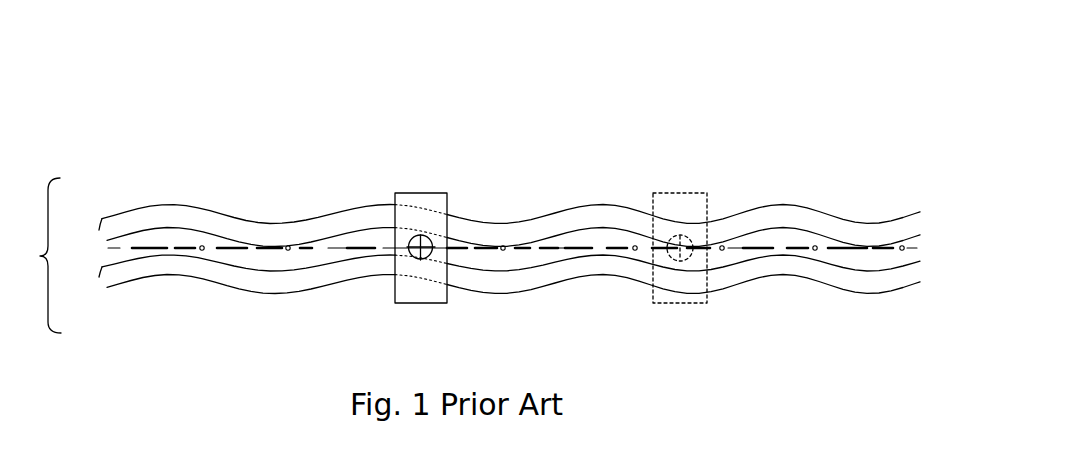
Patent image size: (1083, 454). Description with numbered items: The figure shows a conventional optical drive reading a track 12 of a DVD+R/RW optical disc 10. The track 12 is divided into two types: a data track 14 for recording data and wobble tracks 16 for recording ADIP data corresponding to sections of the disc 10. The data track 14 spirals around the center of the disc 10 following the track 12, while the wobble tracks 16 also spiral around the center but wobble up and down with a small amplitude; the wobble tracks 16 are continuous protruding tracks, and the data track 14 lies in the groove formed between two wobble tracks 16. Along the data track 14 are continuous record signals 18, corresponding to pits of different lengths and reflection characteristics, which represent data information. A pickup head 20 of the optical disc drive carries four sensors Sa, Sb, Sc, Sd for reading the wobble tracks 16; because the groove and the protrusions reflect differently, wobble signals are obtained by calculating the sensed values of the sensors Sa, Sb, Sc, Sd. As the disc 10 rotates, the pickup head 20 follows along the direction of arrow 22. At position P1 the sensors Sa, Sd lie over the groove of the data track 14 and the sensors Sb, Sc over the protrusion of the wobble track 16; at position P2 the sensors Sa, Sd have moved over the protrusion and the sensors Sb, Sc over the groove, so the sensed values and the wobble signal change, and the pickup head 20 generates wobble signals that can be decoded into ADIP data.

The optical disc 10 is at (827, 89).
The track 12 is at (40, 256).
The data track 14 is at (106, 248).
The wobble track 16 is at (107, 240).
The record signal 18 is at (165, 233).
The pickup head 20 is at (440, 298).
The arrow 22 is at (618, 168).
The position P1 is at (423, 168).
The position P2 is at (680, 229).
The sensor Sa is at (434, 247).
The sensor Sb is at (421, 259).
The sensor Sc is at (408, 250).
The sensor Sd is at (421, 236).